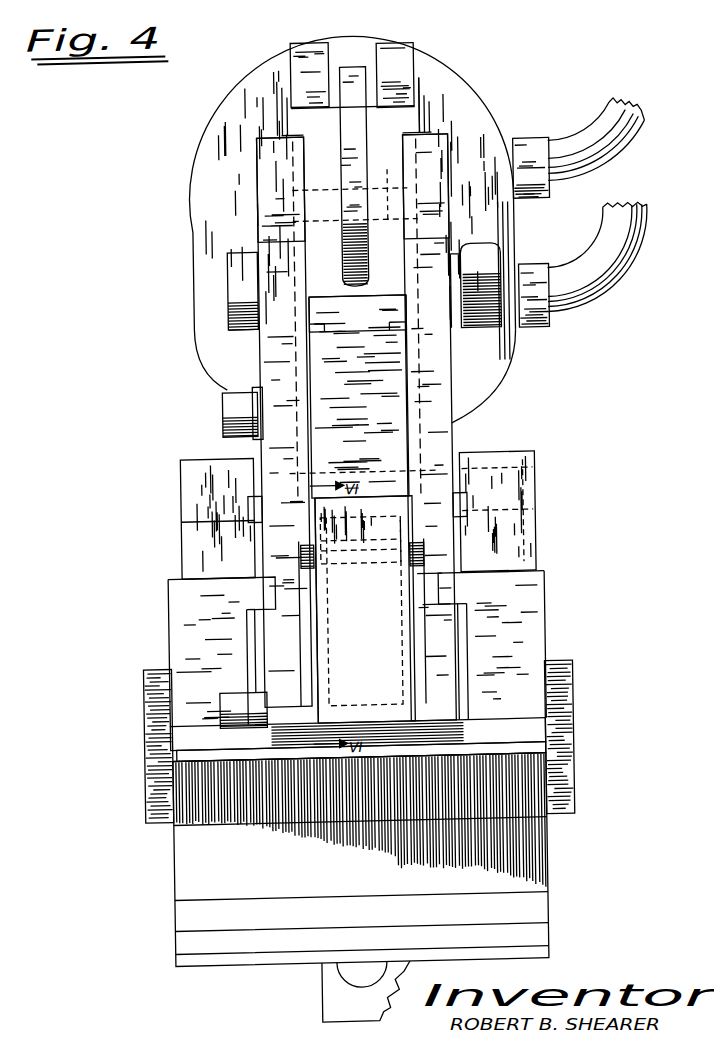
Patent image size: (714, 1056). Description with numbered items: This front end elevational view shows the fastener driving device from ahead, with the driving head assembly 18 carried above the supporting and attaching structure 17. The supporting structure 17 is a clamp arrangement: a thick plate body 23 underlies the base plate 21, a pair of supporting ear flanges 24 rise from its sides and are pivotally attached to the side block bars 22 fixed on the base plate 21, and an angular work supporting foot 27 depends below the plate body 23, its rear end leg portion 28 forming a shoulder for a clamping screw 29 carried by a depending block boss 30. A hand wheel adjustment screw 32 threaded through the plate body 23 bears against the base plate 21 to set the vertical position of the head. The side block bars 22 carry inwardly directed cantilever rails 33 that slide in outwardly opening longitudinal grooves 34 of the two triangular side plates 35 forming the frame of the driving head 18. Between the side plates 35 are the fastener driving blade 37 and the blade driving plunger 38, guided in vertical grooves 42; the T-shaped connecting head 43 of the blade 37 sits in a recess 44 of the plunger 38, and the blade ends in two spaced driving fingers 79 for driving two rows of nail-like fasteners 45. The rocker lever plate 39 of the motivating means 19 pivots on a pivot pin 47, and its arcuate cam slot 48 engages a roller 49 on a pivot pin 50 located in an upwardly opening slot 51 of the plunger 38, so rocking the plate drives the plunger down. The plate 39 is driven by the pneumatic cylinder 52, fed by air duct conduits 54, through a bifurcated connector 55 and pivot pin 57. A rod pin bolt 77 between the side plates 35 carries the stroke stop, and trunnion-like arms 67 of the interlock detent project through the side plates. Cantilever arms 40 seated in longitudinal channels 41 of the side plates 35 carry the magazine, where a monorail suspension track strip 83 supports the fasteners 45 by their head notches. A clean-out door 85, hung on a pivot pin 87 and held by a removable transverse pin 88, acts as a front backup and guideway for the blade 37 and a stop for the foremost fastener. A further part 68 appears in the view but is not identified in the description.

The supporting and attaching structure 17 is at (160, 866).
The fastener driving head assembly 18 is at (474, 434).
The motivating means 19 is at (430, 37).
The base plate 21 is at (535, 734).
The side block bars 22 is at (190, 658).
The plate body 23 is at (533, 805).
The supporting ear flanges 24 is at (158, 708).
The work supporting foot 27 is at (550, 918).
The rear end leg portion 28 is at (519, 882).
The clamping screw 29 is at (353, 977).
The block boss 30 is at (323, 985).
The hand wheel adjustment screw 32 is at (423, 752).
The cantilever rails 33 is at (261, 593).
The longitudinal grooves 34 is at (451, 603).
The side plates 35 is at (272, 365).
The fastener driving blade 37 is at (366, 428).
The blade driving plunger 38 is at (387, 136).
The rocker lever plate 39 is at (358, 68).
The cantilever arms 40 is at (311, 662).
The longitudinal channels 41 is at (306, 616).
The vertical grooves 42 is at (285, 203).
The connecting head 43 is at (331, 306).
The recess 44 is at (372, 304).
The fasteners 45 is at (364, 611).
The pivot pin 47 is at (242, 407).
The cam slot 48 is at (347, 185).
The roller 49 is at (346, 206).
The pivot pin 50 is at (388, 183).
The slot 51 is at (364, 265).
The pneumatic cylinder 52 is at (211, 145).
The air duct conduits 54 is at (573, 268).
The bifurcated connector 55 is at (402, 51).
The pivot pin 57 is at (437, 120).
The trunnion-like arms 67 is at (263, 472).
The side block 68 is at (190, 539).
The rod pin bolt 77 is at (241, 317).
The driving fingers 79 is at (385, 553).
The monorail suspension track plate strip 83 is at (407, 565).
The clean-out door 85 is at (367, 596).
The pivot pin 87 is at (463, 498).
The transverse removable pin 88 is at (238, 716).